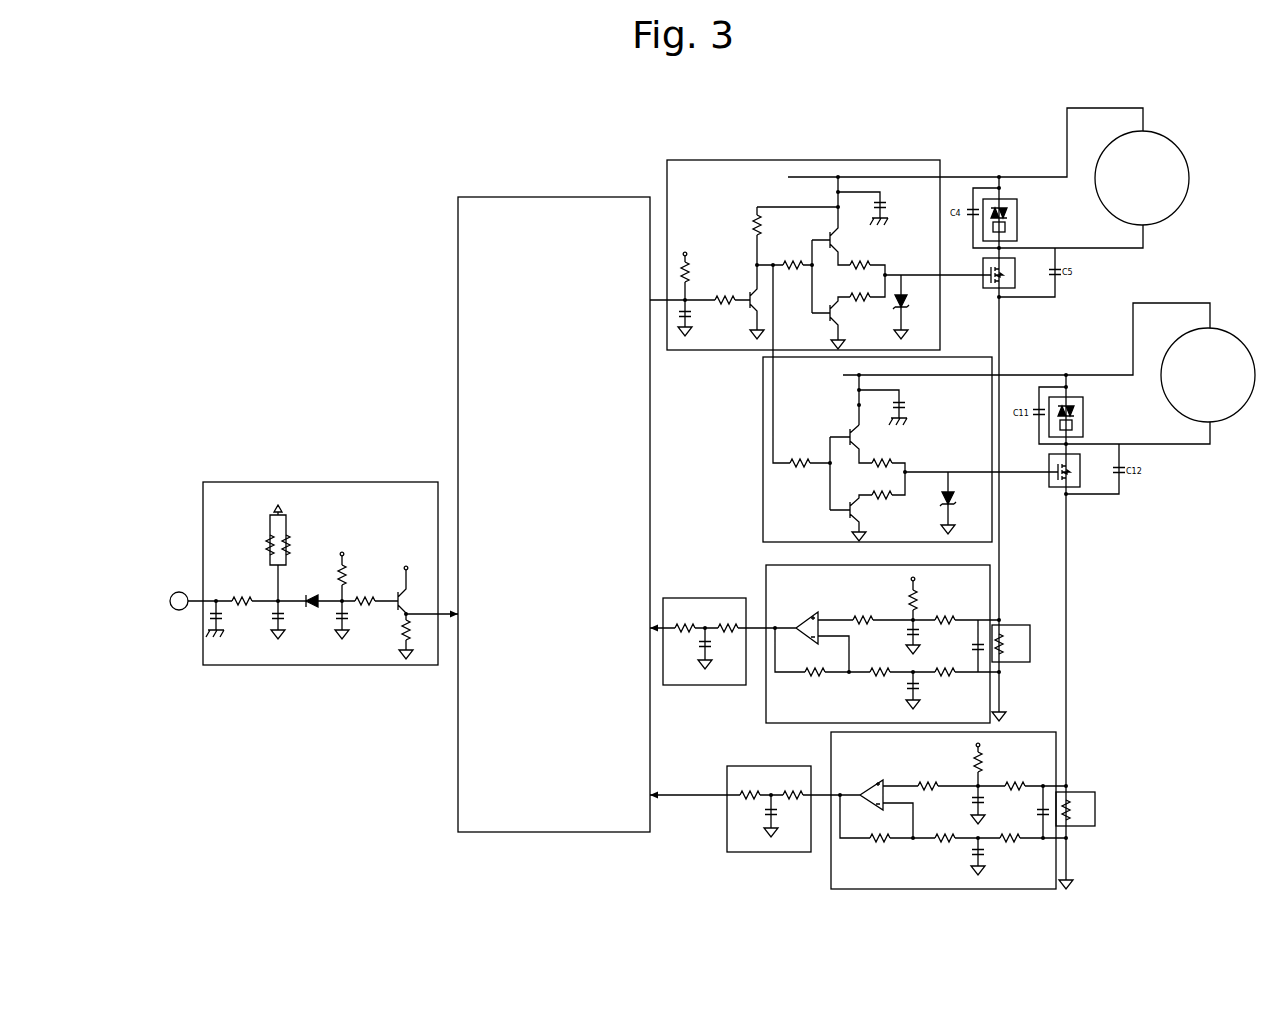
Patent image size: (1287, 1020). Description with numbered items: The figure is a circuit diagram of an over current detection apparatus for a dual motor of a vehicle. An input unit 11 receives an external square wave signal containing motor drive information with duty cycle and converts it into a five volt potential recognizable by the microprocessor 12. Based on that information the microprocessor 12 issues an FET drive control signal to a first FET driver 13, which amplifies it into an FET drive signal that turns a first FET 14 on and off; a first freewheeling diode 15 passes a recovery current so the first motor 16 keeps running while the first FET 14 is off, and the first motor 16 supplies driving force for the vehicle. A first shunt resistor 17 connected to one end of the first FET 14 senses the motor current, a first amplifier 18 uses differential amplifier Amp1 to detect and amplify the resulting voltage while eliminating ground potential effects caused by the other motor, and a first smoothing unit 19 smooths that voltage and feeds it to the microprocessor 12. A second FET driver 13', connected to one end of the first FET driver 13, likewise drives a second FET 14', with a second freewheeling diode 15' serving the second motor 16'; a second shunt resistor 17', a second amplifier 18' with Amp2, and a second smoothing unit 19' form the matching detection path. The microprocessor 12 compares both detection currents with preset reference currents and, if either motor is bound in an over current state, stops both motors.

The input unit 11 is at (352, 482).
The microprocessor 12 is at (547, 197).
The first FET driver 13 is at (801, 255).
The second FET driver 13' is at (884, 403).
The first FET 14 is at (1014, 295).
The second FET 14' is at (1082, 490).
The first freewheeling diode 15 is at (1018, 192).
The second freewheeling diode 15' is at (1086, 387).
The first motor 16 is at (1145, 164).
The second motor 16' is at (1212, 354).
The first shunt resistor 17 is at (1016, 629).
The second shunt resistor 17' is at (1082, 786).
The first amplifier 18 is at (866, 632).
The second amplifier 18' is at (949, 788).
The first smoothing unit 19 is at (708, 621).
The second smoothing unit 19' is at (740, 789).